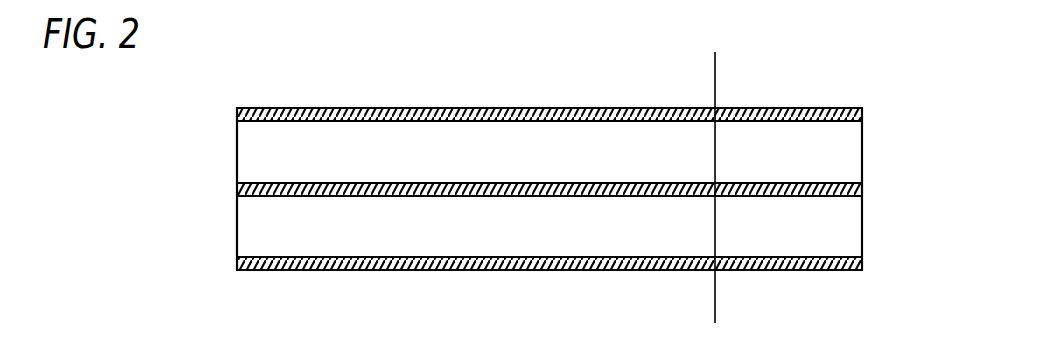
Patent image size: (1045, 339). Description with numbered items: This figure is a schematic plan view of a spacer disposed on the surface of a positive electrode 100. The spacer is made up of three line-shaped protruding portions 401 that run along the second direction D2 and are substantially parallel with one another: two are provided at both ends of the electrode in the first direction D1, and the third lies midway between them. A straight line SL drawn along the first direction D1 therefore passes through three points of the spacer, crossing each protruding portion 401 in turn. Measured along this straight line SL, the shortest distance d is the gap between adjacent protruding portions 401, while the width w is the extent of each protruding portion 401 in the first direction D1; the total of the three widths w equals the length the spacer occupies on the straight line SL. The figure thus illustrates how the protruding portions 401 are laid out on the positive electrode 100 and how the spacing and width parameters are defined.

The positive electrode 100 is at (489, 160).
The line-shaped protruding portion 401 is at (238, 263).
The straight line SL is at (718, 93).
The first direction D1 is at (887, 140).
The second direction D2 is at (615, 82).
The shortest distance d is at (517, 121).
The width w is at (870, 175).